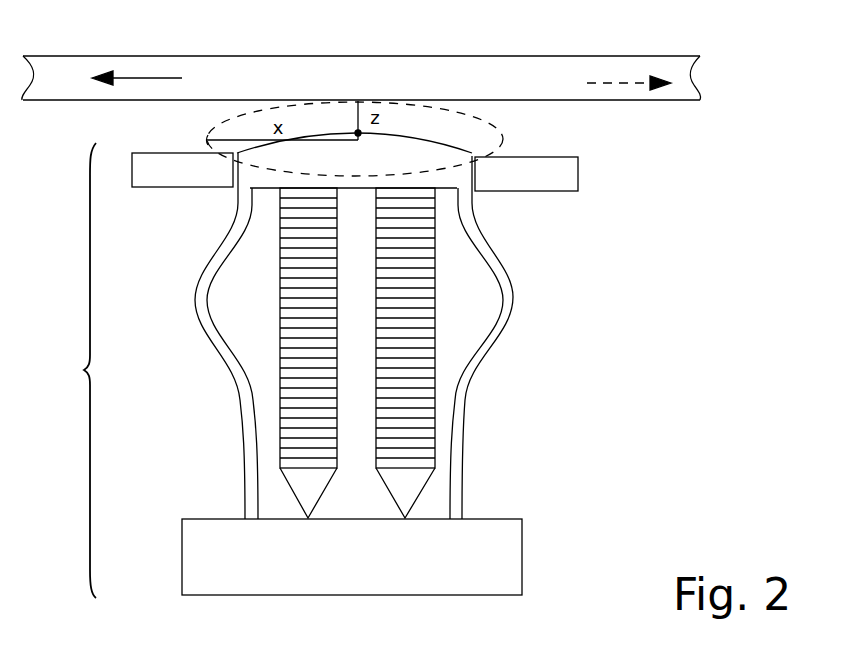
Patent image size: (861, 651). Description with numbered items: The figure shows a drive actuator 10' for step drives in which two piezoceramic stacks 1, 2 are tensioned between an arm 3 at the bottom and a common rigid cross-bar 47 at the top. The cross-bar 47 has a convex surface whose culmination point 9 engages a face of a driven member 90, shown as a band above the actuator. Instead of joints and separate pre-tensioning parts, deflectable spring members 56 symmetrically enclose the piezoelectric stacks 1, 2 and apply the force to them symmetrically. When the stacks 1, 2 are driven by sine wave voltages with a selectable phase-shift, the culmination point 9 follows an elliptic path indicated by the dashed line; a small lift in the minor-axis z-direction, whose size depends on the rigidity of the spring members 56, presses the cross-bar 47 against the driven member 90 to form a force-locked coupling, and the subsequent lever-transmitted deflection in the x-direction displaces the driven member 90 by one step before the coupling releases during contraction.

The piezoceramic stack 1 is at (310, 392).
The piezoceramic stack 2 is at (403, 400).
The arm 3 is at (362, 578).
The culmination point 9 is at (357, 131).
The drive actuator 10' is at (62, 370).
The cross-bar 47 is at (377, 160).
The spring members 56 is at (203, 302).
The driven member 90 is at (570, 83).